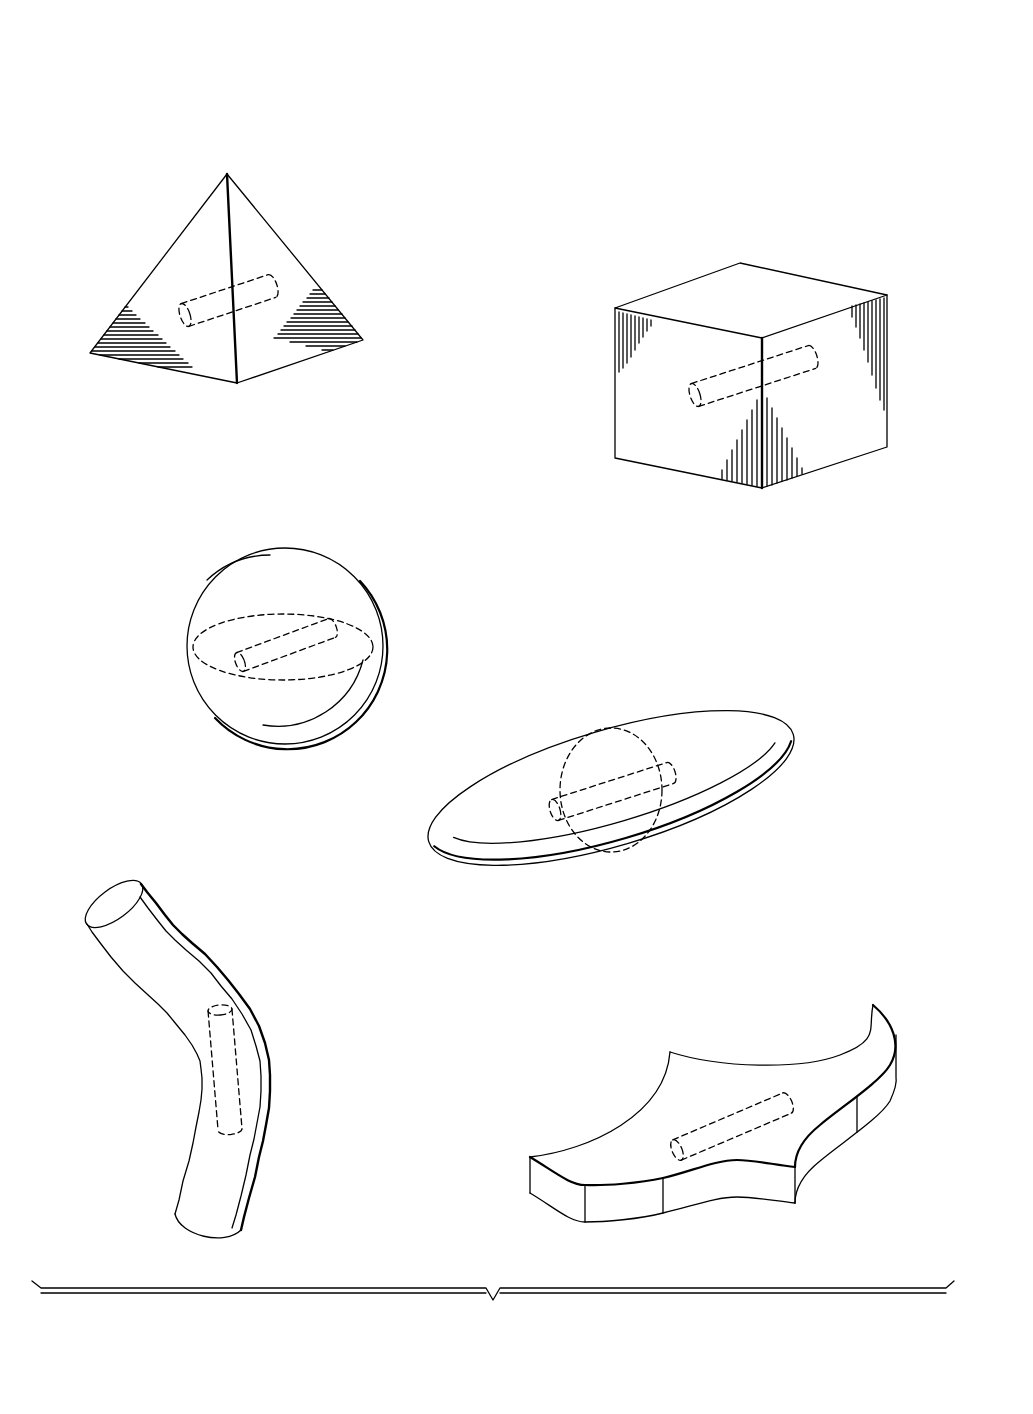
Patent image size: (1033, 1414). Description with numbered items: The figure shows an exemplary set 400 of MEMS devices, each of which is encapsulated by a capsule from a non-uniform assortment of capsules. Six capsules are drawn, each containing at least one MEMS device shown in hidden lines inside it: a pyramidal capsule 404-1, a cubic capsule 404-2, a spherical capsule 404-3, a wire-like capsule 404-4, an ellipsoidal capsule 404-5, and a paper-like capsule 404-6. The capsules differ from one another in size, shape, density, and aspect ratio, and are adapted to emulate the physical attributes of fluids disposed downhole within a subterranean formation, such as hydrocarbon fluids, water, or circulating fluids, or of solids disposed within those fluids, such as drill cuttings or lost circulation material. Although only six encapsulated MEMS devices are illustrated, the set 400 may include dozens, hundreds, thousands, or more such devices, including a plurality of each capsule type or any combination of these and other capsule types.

The set of MEMS devices 400 is at (249, 58).
The pyramidal capsule 404-1 is at (177, 240).
The cubic capsule 404-2 is at (813, 278).
The spherical capsule 404-3 is at (285, 548).
The wire-like capsule 404-4 is at (205, 918).
The ellipsoidal capsule 404-5 is at (723, 712).
The paper-like capsule 404-6 is at (625, 1155).